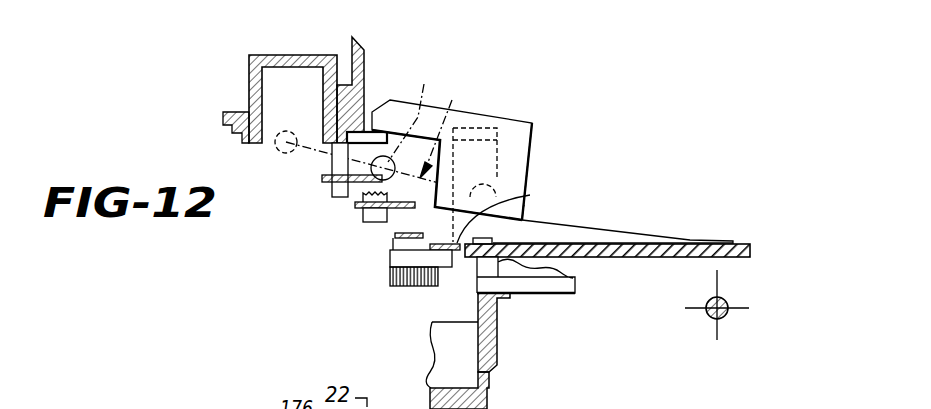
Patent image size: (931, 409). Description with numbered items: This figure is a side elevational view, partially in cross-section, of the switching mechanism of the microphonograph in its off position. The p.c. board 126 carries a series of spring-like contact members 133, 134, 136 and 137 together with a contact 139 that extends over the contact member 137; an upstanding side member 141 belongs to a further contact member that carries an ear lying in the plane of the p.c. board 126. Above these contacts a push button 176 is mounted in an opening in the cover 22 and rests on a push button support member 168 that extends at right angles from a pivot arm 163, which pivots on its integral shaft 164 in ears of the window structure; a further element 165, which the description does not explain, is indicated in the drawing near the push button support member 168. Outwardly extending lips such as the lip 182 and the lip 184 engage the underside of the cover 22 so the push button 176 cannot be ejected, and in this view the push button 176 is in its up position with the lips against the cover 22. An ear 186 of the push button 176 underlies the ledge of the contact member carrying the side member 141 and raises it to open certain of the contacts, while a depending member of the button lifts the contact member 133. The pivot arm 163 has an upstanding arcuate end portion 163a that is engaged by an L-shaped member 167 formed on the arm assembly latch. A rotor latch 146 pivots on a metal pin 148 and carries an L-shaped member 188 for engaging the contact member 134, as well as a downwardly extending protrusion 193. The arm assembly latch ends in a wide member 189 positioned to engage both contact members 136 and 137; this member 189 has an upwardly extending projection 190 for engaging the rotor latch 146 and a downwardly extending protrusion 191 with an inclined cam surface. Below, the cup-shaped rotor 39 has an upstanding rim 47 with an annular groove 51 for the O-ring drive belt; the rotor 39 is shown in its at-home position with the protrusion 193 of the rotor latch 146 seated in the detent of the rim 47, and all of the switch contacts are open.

The cover 22 is at (358, 43).
The cup-shaped rotor 39 is at (437, 350).
The upstanding rim 47 is at (498, 356).
The annular groove 51 is at (488, 378).
The p.c. board 126 is at (643, 255).
The contact member 133 is at (323, 180).
The contact member 134 is at (355, 206).
The contact member 136 is at (393, 243).
The contact member 137 is at (492, 238).
The contact 139 is at (523, 221).
The side member 141 is at (533, 126).
The rotor latch 146 is at (577, 290).
The metal pin 148 is at (727, 300).
The pivot arm 163 is at (457, 112).
The arcuate end portion 163a is at (497, 180).
The shaft 164 is at (446, 128).
The pivot pin 165 is at (283, 152).
The L-shaped member 167 is at (503, 110).
The push button support member 168 is at (366, 62).
The push button 176 is at (296, 55).
The lip 182 is at (378, 136).
The lip 184 is at (233, 133).
The ear 186 is at (409, 120).
The L-shaped member 188 is at (364, 218).
The member 189 is at (397, 297).
The upwardly extending projection 190 is at (398, 264).
The downwardly extending protrusion 191 is at (402, 288).
The downwardly extending protrusion 193 is at (503, 295).